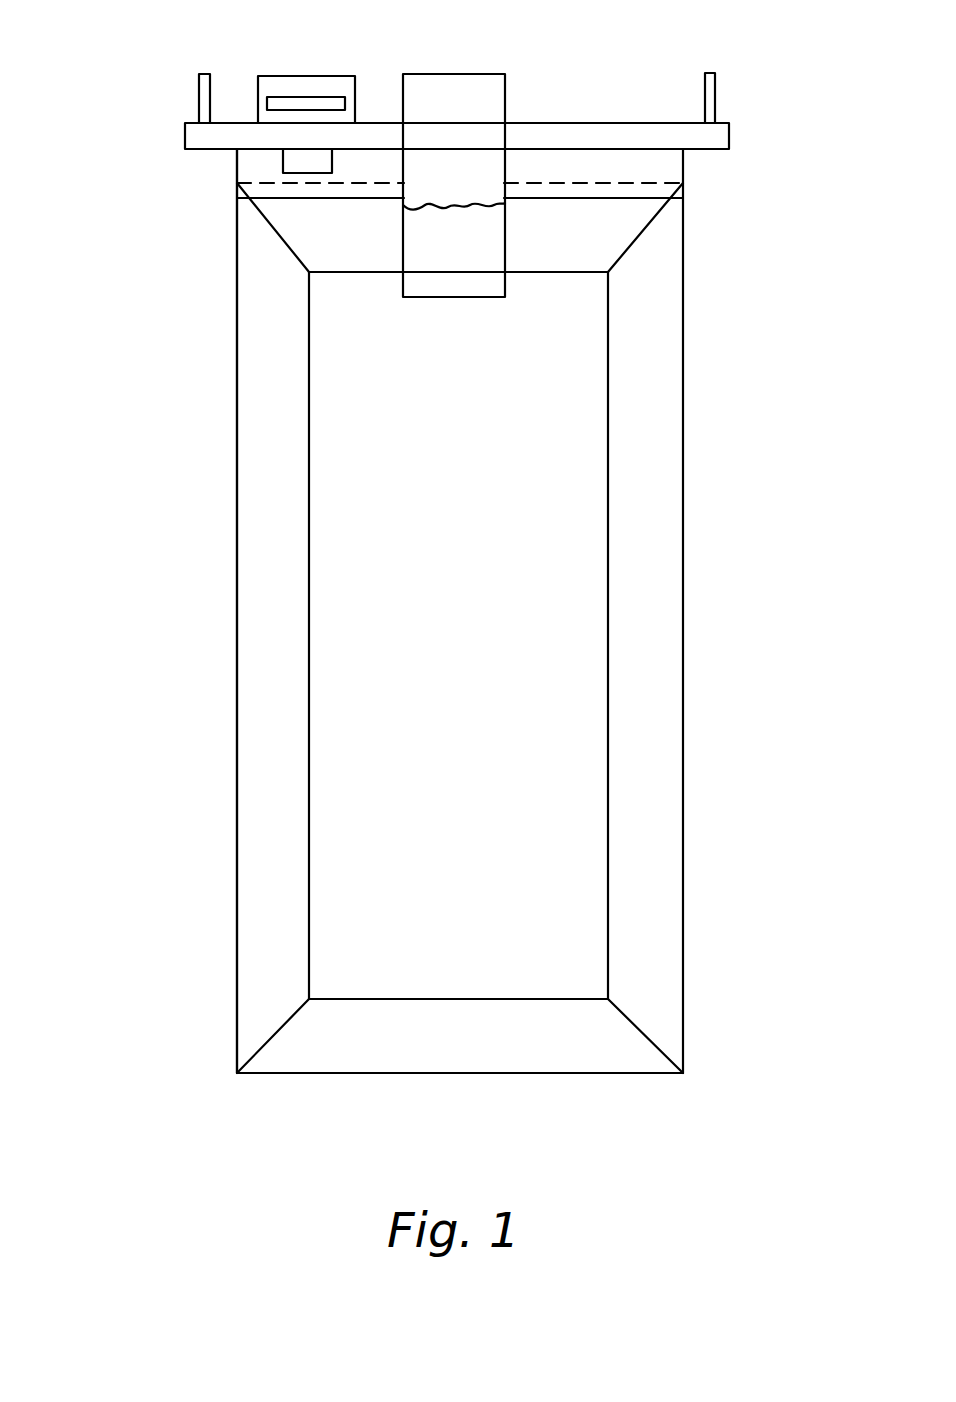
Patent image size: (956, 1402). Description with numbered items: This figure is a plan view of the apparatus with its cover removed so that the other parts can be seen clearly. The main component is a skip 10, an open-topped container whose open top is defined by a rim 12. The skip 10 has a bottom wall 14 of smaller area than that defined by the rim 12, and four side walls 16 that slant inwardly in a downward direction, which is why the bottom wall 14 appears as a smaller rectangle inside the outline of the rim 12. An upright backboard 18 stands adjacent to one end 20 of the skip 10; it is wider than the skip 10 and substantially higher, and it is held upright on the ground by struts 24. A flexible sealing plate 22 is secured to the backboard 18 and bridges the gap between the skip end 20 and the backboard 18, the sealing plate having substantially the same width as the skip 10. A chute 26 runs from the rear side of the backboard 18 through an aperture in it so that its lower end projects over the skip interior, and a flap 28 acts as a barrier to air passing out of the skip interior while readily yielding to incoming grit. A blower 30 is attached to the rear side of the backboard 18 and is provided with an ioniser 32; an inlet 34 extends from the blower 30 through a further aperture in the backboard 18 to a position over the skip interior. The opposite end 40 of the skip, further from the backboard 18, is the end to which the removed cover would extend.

The skip 10 is at (585, 685).
The rim 12 is at (237, 890).
The bottom wall 14 is at (567, 512).
The side walls 16 is at (660, 842).
The backboard 18 is at (720, 137).
The end of skip 20 is at (632, 182).
The flexible sealing plate 22 is at (618, 162).
The struts 24 is at (200, 85).
The chute 26 is at (453, 100).
The flap 28 is at (482, 175).
The blower 30 is at (282, 87).
The ioniser 32 is at (322, 100).
The inlet 34 is at (297, 162).
The end of skip 40 is at (417, 1075).